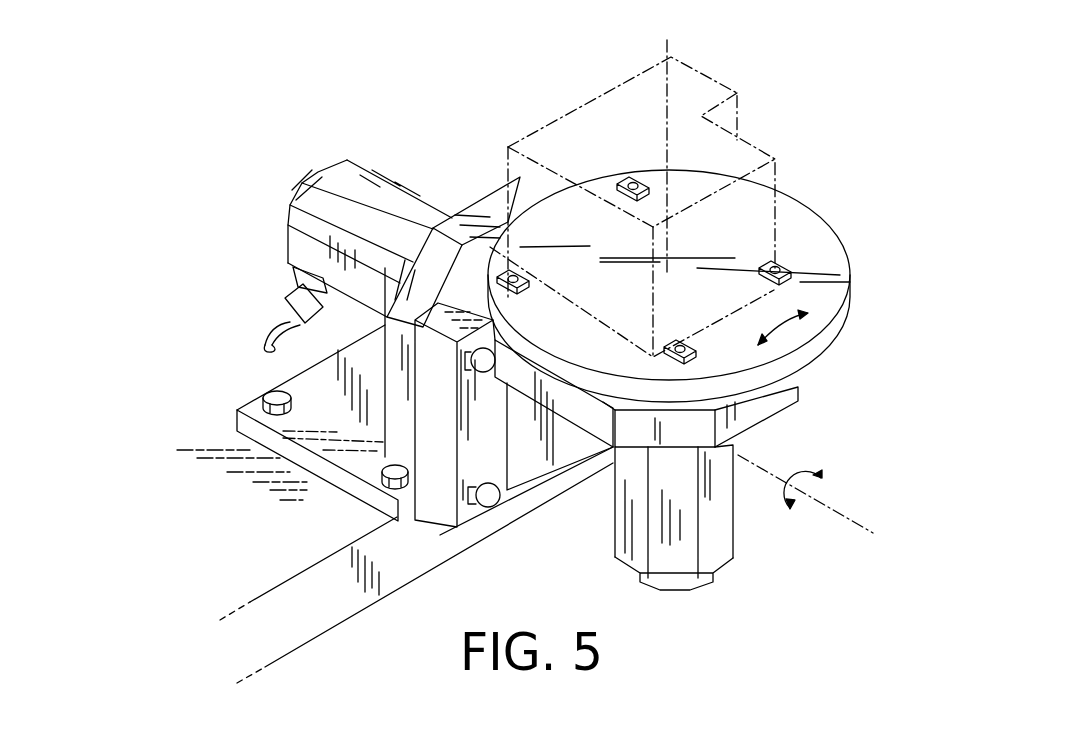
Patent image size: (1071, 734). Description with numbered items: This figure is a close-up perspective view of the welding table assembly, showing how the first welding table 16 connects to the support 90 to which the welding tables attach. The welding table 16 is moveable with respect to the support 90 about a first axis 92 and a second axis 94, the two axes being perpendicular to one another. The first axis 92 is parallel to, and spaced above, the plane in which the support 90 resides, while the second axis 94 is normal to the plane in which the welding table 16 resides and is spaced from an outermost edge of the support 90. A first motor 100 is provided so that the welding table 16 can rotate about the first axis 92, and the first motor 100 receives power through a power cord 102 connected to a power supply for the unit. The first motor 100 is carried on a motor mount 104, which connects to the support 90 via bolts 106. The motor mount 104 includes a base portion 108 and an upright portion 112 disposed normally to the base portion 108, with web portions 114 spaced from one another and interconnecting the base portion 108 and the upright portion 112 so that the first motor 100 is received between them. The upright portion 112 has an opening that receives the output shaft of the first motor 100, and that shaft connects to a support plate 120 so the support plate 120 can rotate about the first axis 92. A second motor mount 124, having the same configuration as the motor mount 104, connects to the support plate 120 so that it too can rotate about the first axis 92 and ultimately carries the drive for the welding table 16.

The first welding table 16 is at (813, 228).
The support 90 is at (357, 607).
The first axis 92 is at (847, 517).
The second axis 94 is at (668, 43).
The first motor 100 is at (352, 168).
The power cord 102 is at (277, 333).
The motor mount 104 is at (330, 490).
The bolts 106 is at (272, 398).
The base portion 108 is at (263, 433).
The upright portion 112 is at (490, 210).
The web portions 114 is at (313, 372).
The support plate 120 is at (437, 520).
The second motor mount 124 is at (553, 483).